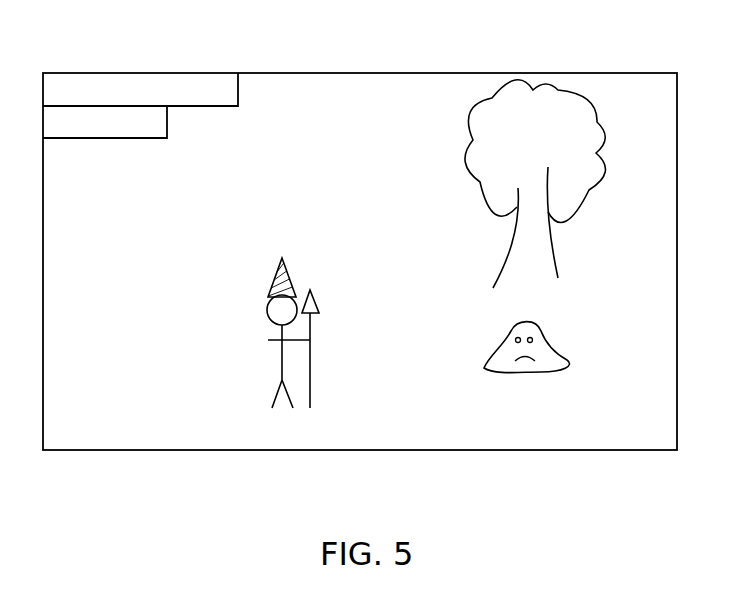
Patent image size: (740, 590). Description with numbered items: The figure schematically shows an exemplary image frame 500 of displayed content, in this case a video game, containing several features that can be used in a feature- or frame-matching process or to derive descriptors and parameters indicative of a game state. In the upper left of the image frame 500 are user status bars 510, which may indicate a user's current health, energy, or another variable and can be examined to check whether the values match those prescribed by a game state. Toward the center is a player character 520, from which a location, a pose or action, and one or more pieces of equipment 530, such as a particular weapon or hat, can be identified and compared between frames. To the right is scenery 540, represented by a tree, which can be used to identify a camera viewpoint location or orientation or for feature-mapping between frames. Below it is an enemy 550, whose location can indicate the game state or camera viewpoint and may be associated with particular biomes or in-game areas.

The image frame 500 is at (581, 506).
The user status bars 510 is at (189, 86).
The player character 520 is at (284, 369).
The pieces of equipment 530 is at (312, 290).
The scenery 540 is at (553, 100).
The enemy 550 is at (548, 344).